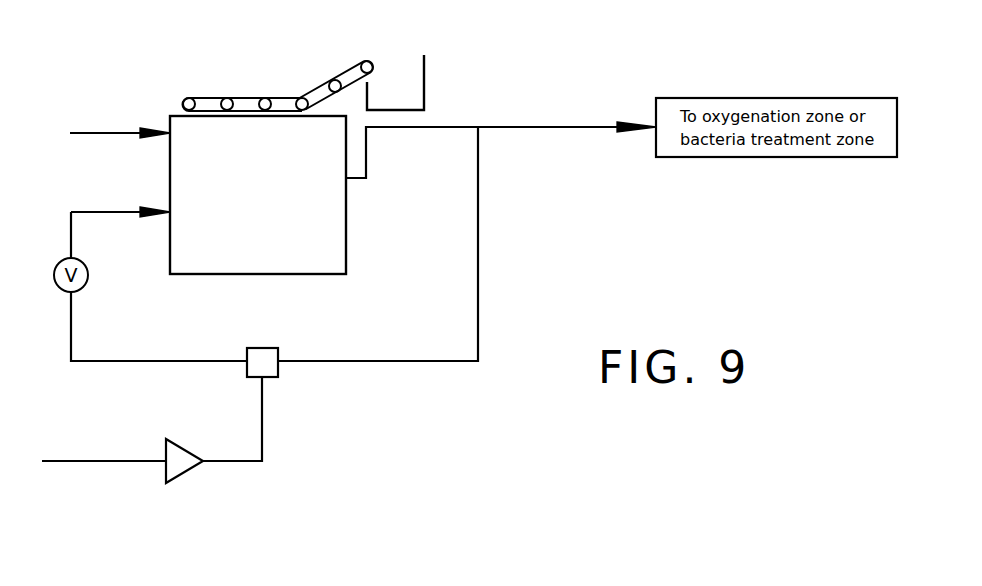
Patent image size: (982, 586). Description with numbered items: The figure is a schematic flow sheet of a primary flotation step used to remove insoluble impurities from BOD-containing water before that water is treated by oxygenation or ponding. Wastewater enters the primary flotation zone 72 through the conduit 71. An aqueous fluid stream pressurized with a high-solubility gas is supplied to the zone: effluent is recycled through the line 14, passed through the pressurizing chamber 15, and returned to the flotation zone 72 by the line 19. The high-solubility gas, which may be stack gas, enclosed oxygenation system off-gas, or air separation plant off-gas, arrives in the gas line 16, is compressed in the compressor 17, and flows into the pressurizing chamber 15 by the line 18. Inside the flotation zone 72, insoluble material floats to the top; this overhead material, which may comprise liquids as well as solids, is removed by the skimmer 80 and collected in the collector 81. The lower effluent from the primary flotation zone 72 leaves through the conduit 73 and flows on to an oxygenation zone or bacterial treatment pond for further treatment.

The conduit 71 is at (110, 132).
The primary flotation zone 72 is at (348, 214).
The conduit 73 is at (381, 128).
The skimmer 80 is at (247, 64).
The collector 81 is at (425, 76).
The recycle line 14 is at (480, 313).
The control valve 15 is at (280, 350).
The feed line 16 is at (113, 437).
The pump 17 is at (182, 443).
The pump discharge line 18 is at (220, 458).
The line to tank 19 is at (74, 333).